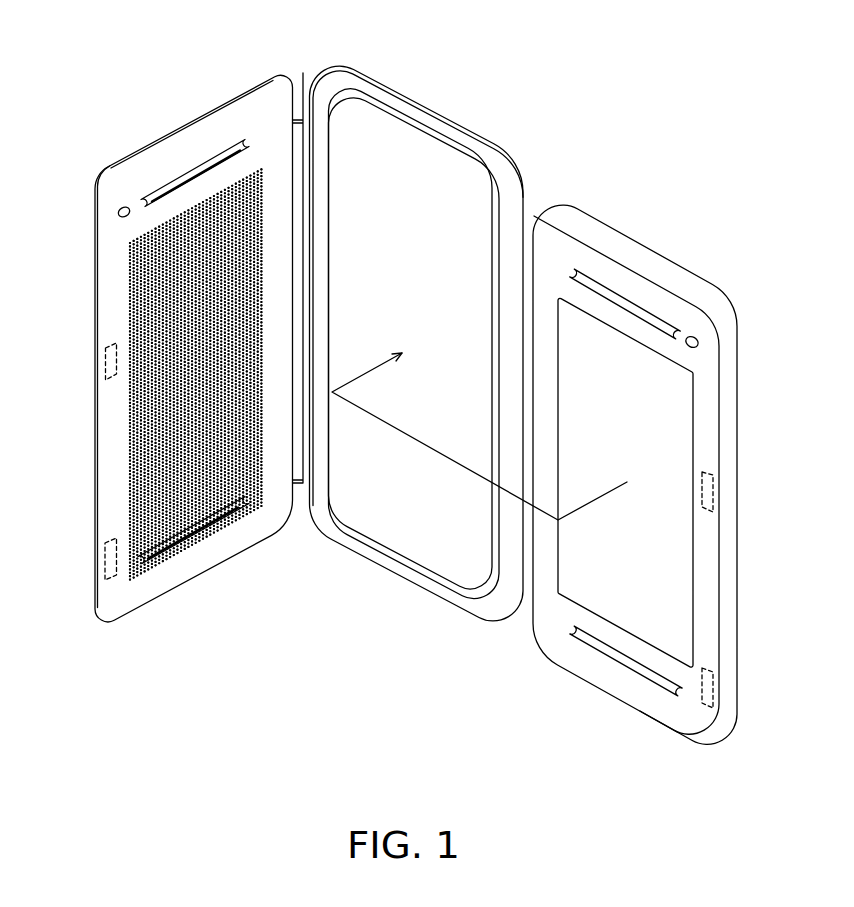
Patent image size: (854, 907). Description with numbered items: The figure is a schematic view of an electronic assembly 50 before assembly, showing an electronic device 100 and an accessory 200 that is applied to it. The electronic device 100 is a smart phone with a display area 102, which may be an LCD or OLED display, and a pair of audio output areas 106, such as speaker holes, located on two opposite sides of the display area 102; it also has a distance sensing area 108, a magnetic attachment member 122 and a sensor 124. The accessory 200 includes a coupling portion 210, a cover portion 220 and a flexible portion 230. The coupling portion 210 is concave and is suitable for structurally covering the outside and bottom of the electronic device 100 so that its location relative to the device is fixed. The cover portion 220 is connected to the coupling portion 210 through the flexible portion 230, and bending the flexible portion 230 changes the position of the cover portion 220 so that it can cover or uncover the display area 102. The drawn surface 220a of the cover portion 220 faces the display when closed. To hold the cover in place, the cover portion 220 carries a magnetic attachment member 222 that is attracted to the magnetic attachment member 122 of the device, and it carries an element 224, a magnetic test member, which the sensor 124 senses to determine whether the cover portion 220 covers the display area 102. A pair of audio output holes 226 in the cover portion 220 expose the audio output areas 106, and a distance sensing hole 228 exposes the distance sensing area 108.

The electronic assembly 50 is at (658, 122).
The electronic device 100 is at (734, 255).
The display area 102 is at (672, 553).
The audio output areas 106 is at (602, 290).
The distance sensing area 108 is at (701, 338).
The magnetic attachment member 122 is at (706, 482).
The sensor 124 is at (713, 687).
The accessory 200 is at (527, 110).
The coupling portion 210 is at (414, 112).
The cover portion 220 is at (180, 127).
The perforated region of cover plate 220a is at (127, 247).
The magnetic attachment member 222 is at (104, 366).
The element 224 is at (104, 557).
The audio output holes 226 is at (234, 154).
The distance sensing hole 228 is at (136, 206).
The flexible portion 230 is at (303, 73).